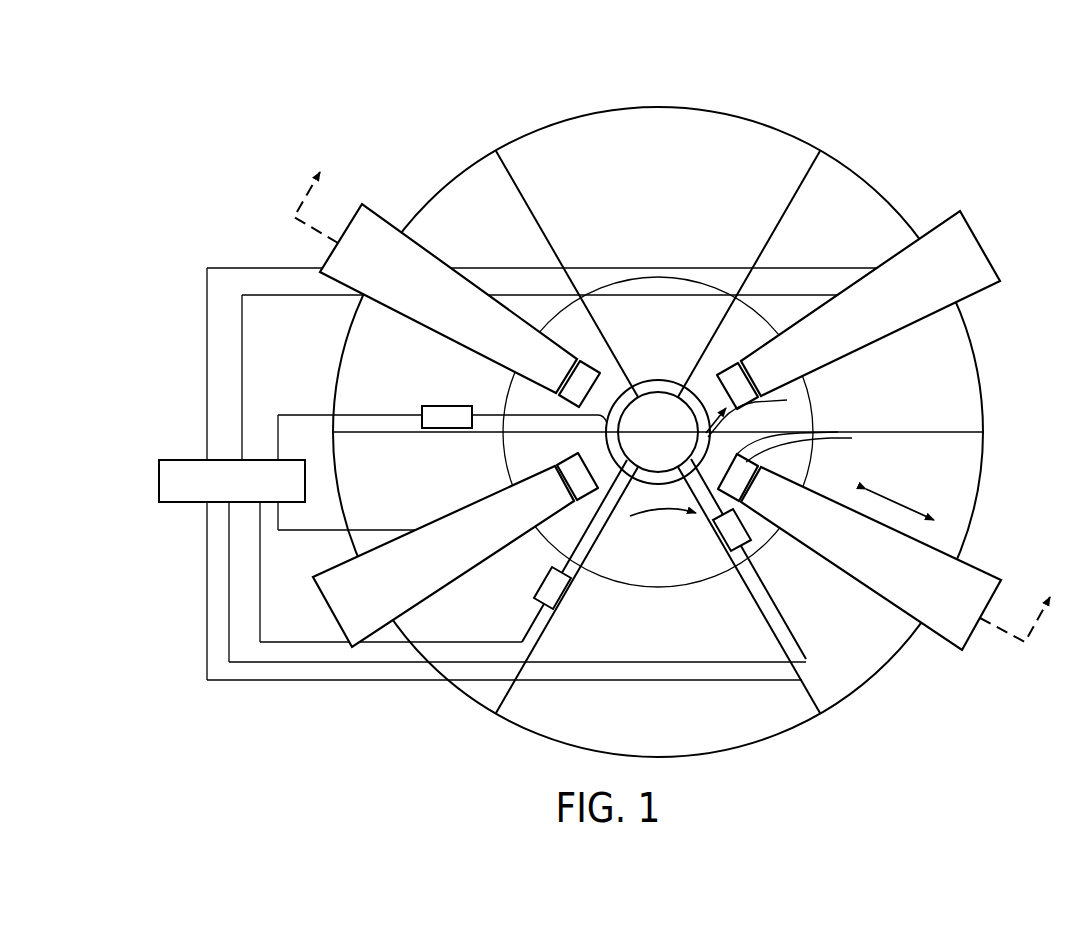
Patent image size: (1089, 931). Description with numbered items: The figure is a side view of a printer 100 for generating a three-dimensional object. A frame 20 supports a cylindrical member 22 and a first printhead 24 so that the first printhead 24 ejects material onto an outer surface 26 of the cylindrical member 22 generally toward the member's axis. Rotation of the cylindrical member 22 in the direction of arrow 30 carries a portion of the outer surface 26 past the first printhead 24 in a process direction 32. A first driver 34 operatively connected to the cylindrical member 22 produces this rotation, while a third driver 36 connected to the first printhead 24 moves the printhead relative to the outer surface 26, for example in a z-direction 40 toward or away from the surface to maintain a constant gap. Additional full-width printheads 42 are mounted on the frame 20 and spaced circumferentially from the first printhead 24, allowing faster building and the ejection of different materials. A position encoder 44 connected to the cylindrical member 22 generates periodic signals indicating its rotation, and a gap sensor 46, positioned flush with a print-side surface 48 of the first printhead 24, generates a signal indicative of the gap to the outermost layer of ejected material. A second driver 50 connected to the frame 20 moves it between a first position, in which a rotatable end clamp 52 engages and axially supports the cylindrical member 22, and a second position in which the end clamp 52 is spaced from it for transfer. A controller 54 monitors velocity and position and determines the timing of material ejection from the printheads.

The printer 100 is at (338, 122).
The frame 20 is at (845, 165).
The cylindrical member 22 is at (673, 384).
The first printhead 24 is at (850, 438).
The outer surface 26 is at (733, 366).
The arrow 30 is at (660, 522).
The process direction 32 is at (757, 412).
The first driver 34 is at (445, 406).
The third driver 36 is at (378, 310).
The z-direction 40 is at (912, 498).
The additional full-width printheads 42 is at (577, 356).
The position encoder 44 is at (755, 540).
The gap sensor 46 is at (815, 433).
The print-side surface 48 is at (700, 490).
The second driver 50 is at (536, 586).
The rotatable end clamp 52 is at (650, 379).
The controller 54 is at (190, 460).